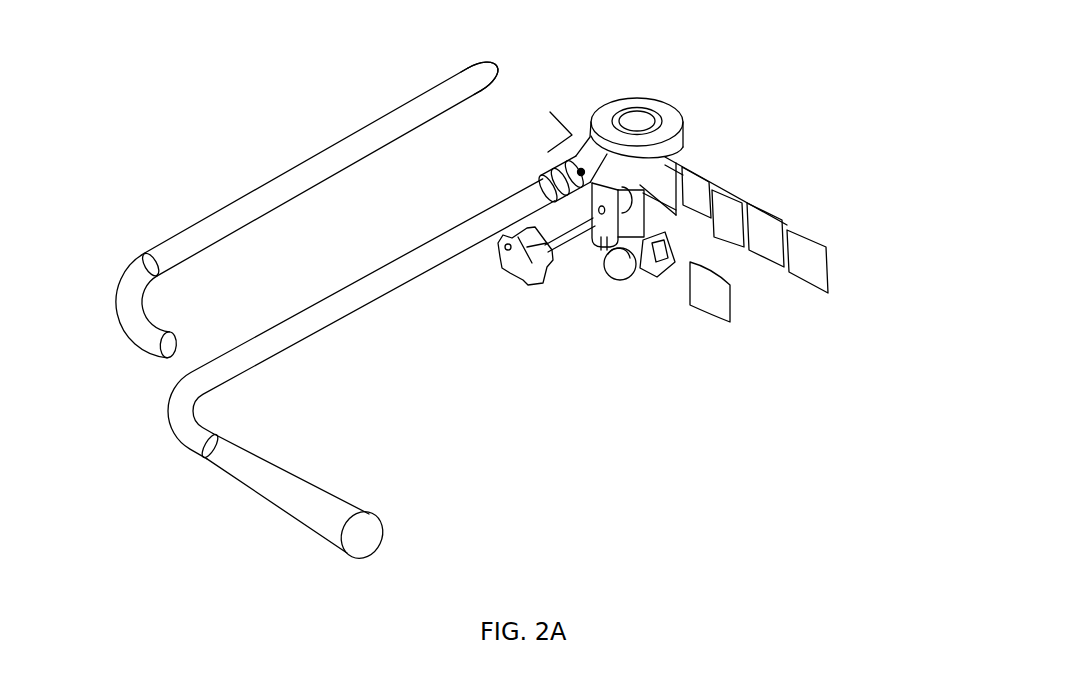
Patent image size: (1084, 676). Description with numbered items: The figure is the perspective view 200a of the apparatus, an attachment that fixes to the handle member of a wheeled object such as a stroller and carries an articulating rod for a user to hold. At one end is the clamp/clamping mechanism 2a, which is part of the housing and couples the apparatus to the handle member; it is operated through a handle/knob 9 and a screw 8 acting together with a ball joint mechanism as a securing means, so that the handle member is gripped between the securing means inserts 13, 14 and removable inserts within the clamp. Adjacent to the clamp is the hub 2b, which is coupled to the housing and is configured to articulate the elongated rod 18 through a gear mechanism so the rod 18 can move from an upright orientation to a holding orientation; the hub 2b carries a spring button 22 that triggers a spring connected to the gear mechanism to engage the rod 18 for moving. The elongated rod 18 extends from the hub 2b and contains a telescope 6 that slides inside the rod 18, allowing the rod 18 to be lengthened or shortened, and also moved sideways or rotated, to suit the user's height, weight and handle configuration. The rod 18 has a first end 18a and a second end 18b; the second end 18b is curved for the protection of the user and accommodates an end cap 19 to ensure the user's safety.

The perspective view 200a is at (106, 111).
The clamp/clamping mechanism 2a is at (713, 126).
The hub 2b is at (872, 248).
The telescope 6 is at (172, 234).
The screw 8 is at (565, 244).
The handle/knob 9 is at (512, 275).
The securing means insert 13 is at (670, 281).
The securing means insert 14 is at (646, 294).
The elongated rod 18 is at (285, 308).
The first end 18a is at (458, 64).
The second end 18b is at (124, 339).
The end cap 19 is at (268, 490).
The spring button 22 is at (538, 100).